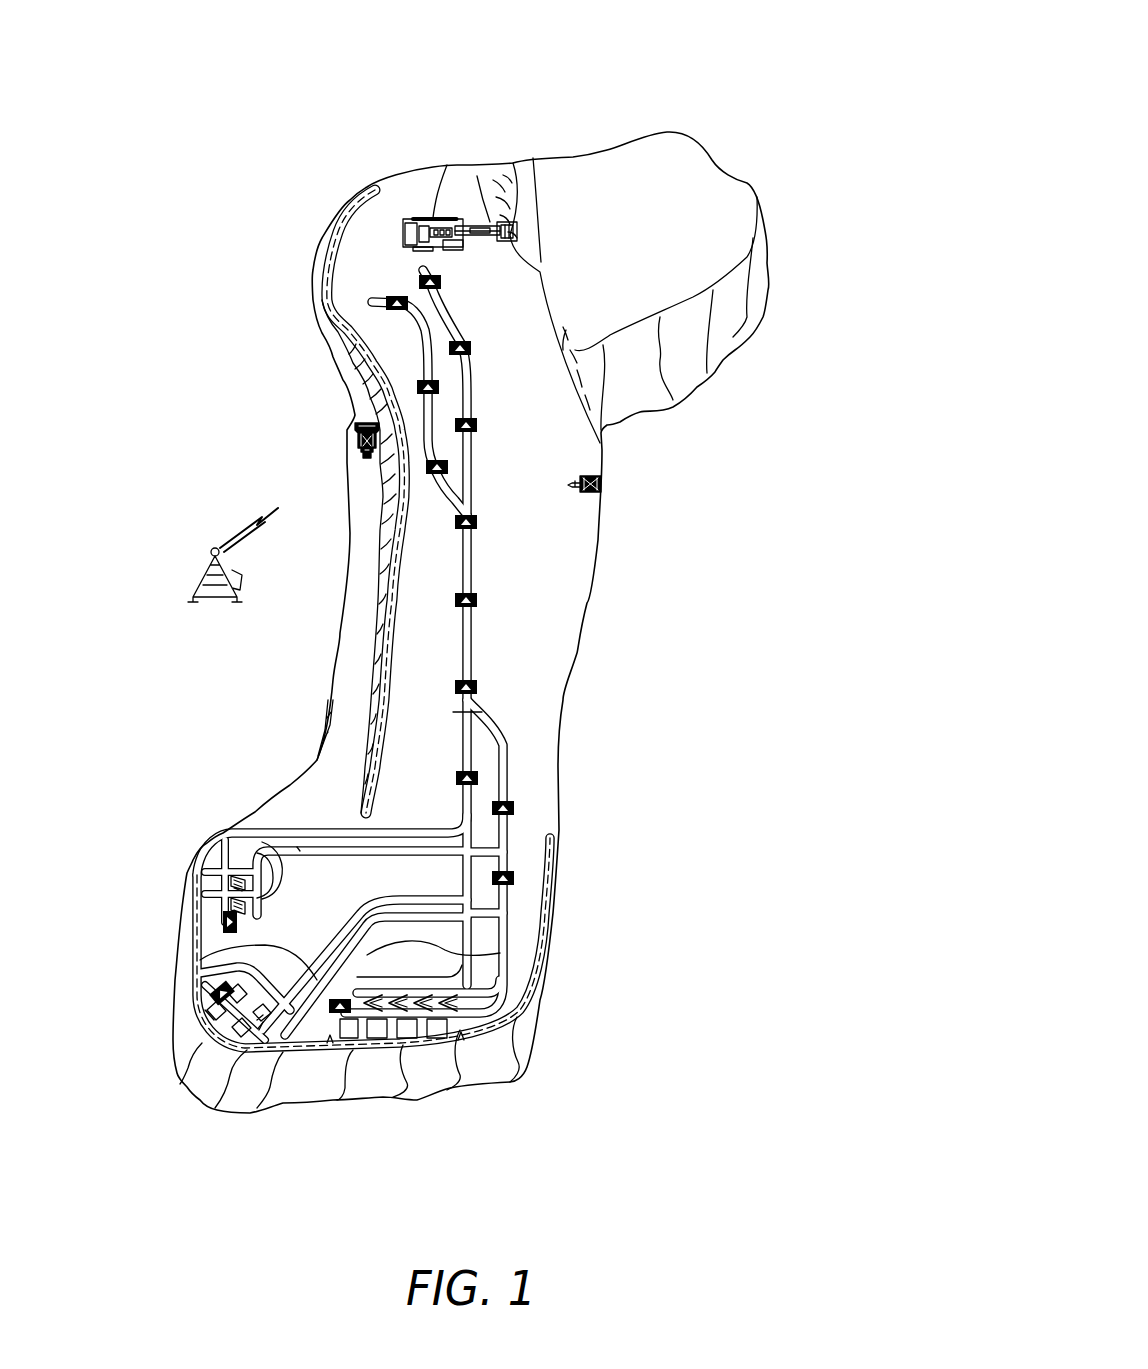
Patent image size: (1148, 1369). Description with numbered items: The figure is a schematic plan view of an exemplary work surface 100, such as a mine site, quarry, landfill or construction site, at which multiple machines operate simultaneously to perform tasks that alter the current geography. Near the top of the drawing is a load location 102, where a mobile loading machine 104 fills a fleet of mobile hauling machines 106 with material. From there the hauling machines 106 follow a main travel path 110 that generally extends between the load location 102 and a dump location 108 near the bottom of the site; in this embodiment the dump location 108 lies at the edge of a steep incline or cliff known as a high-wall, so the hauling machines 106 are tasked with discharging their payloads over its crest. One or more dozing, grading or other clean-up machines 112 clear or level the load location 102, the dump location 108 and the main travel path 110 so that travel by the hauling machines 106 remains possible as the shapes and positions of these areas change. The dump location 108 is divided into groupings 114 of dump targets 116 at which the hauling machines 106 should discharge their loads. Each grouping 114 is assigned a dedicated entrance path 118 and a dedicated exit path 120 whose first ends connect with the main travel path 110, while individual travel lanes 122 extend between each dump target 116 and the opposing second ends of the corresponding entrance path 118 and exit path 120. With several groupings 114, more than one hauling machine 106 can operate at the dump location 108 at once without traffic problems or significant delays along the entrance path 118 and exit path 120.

The work surface 100 is at (782, 65).
The load location 102 is at (346, 265).
The mobile loading machine 104 is at (447, 167).
The mobile hauling machines 106 is at (480, 603).
The dump location 108 is at (311, 892).
The main travel path 110 is at (471, 645).
The clean-up machines 112 is at (355, 438).
The groupings 114 is at (258, 862).
The dump targets 116 is at (210, 872).
The entrance path 118 is at (297, 847).
The exit path 120 is at (337, 830).
The individual travel lanes 122 is at (227, 894).